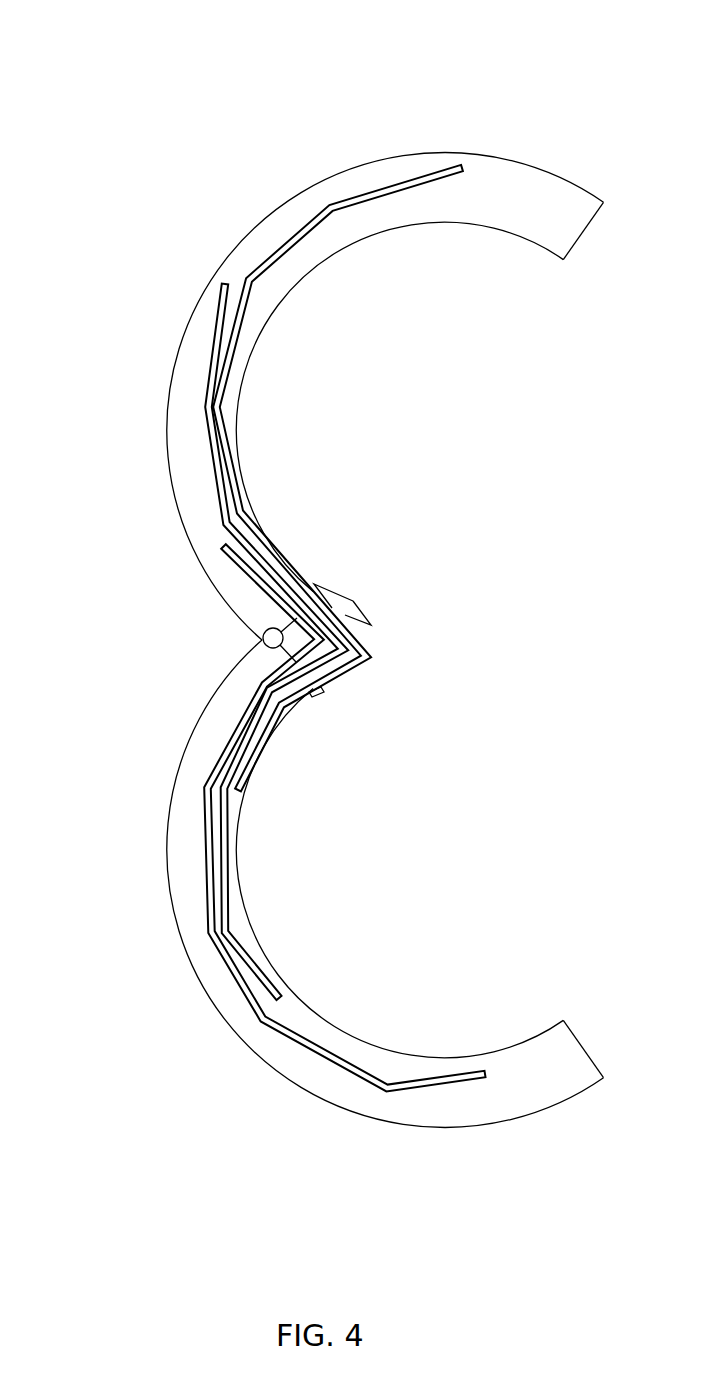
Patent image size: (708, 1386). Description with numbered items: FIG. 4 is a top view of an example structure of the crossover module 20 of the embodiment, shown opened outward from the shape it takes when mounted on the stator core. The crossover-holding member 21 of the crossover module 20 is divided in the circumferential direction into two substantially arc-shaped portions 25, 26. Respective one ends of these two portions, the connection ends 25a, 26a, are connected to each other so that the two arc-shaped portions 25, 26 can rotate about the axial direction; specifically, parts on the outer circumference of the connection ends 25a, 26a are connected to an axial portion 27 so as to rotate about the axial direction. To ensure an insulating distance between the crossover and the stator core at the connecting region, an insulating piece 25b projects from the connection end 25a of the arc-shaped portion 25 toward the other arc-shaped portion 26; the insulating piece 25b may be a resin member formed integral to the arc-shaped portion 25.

The crossover module 20 is at (180, 127).
The crossover-holding member 21 is at (187, 879).
The arc-shaped portion 25 is at (367, 175).
The connection end 25a is at (342, 598).
The insulating piece 25b is at (365, 624).
The arc-shaped portion 26 is at (360, 1100).
The connection end 26a is at (326, 688).
The axial portion 27 is at (263, 638).